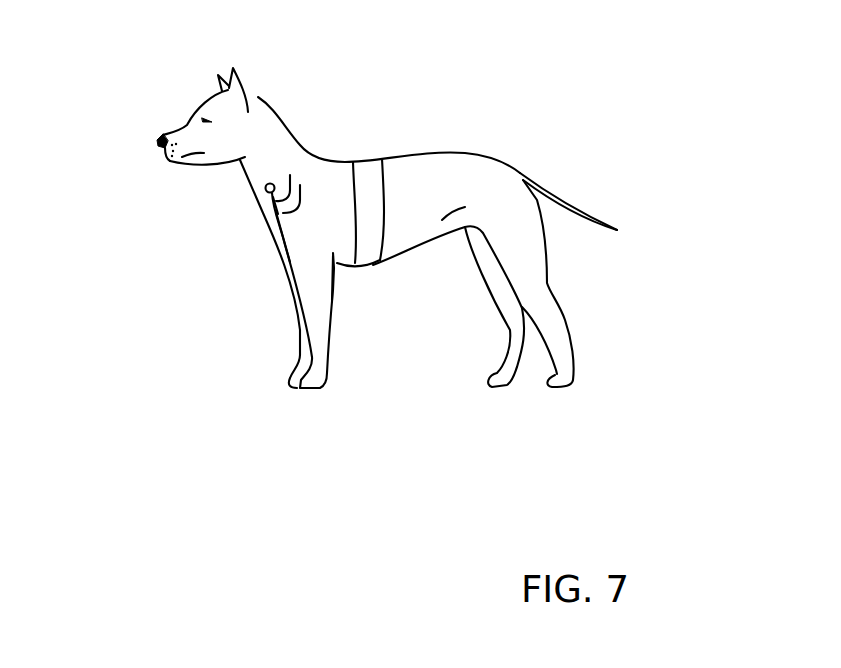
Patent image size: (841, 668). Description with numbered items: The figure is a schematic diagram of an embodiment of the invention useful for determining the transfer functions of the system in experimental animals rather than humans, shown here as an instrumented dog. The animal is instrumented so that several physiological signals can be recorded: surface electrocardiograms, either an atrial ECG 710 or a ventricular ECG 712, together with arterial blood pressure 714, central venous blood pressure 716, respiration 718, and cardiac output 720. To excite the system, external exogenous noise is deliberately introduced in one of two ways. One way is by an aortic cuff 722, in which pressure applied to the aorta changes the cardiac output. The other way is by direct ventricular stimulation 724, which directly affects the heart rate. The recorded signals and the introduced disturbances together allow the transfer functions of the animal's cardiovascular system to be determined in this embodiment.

The atrial surface ECG 710 is at (290, 175).
The ventricular surface ECG 712 is at (300, 185).
The arterial blood pressure 714 is at (319, 277).
The central venous blood pressure 716 is at (312, 213).
The respiration 718 is at (370, 158).
The cardiac output 720 is at (268, 213).
The aortic cuff 722 is at (265, 191).
The direct ventricular stimulation 724 is at (279, 235).